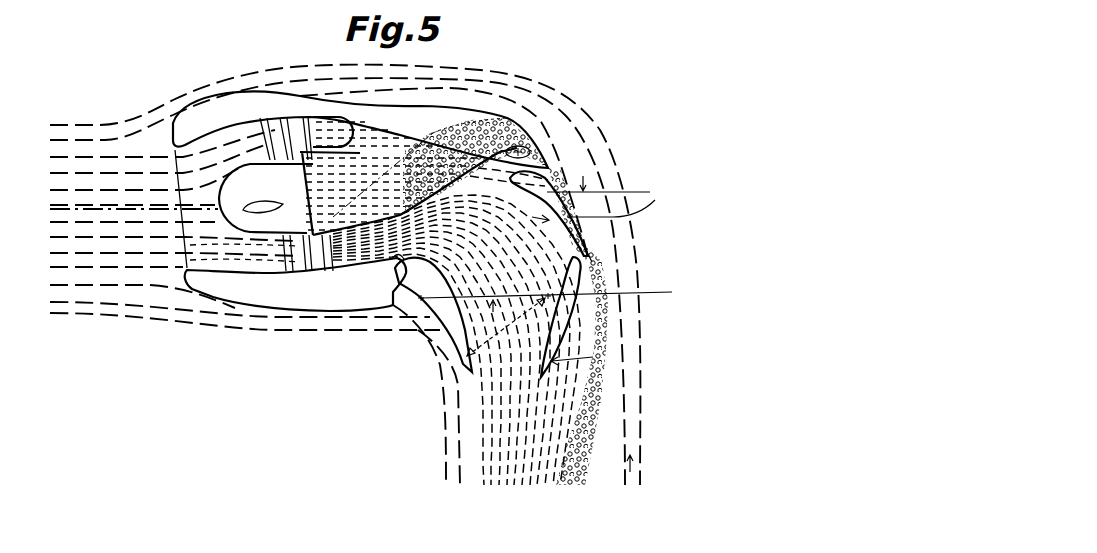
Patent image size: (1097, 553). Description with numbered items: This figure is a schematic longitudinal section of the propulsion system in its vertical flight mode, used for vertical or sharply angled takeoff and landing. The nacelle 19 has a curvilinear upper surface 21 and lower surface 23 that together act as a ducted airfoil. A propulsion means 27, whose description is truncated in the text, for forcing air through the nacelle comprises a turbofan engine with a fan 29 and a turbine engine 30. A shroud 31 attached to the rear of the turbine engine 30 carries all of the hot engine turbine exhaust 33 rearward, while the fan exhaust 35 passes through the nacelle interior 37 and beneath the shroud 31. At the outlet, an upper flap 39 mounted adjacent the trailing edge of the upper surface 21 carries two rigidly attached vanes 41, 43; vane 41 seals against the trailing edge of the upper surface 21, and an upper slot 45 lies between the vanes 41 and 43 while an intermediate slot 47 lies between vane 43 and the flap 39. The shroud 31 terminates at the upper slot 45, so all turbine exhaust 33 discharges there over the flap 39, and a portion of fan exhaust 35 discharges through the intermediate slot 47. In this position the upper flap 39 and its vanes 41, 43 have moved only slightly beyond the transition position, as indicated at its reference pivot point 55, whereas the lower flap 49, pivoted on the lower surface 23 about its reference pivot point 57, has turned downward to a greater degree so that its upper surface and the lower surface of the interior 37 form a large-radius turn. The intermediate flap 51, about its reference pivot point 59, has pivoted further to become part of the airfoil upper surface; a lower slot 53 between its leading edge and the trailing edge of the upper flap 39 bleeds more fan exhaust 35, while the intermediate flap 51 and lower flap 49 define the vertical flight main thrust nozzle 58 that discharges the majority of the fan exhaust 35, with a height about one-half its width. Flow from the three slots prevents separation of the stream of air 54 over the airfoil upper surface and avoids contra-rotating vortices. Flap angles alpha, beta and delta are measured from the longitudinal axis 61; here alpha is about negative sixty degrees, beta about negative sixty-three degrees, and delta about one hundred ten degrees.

The nacelle 19 is at (180, 272).
The upper surface 21 is at (203, 100).
The lower surface 23 is at (280, 255).
The inlet flow stream 27 is at (187, 272).
The fan 29 is at (290, 265).
The turbine engine 30 is at (333, 213).
The shroud 31 is at (438, 133).
The engine turbine exhaust 33 is at (452, 128).
The fan exhaust 35 is at (383, 237).
The nacelle interior 37 is at (405, 258).
The upper flap 39 is at (600, 213).
The vane 41 is at (528, 138).
The vane 43 is at (553, 146).
The upper slot 45 is at (570, 158).
The intermediate slot 47 is at (583, 178).
The lower flap 49 is at (403, 290).
The intermediate flap 51 is at (575, 293).
The lower slot 53 is at (590, 260).
The stream of air 54 is at (633, 298).
The reference pivot point 55 is at (535, 148).
The reference pivot point 57 is at (398, 358).
The vertical flight main thrust nozzle 58 is at (423, 442).
The reference pivot point 59 is at (423, 403).
The longitudinal axis 61 is at (118, 205).